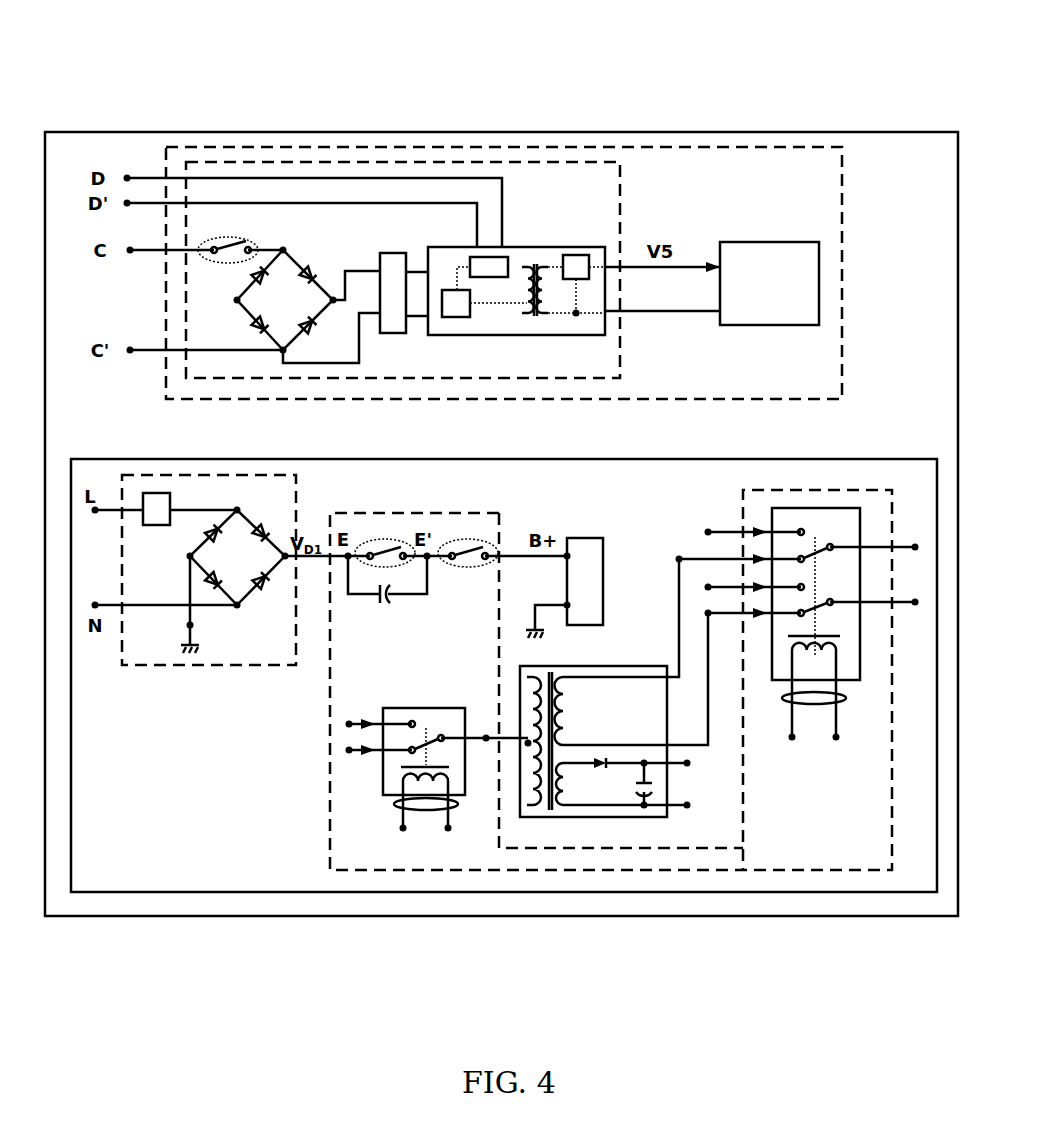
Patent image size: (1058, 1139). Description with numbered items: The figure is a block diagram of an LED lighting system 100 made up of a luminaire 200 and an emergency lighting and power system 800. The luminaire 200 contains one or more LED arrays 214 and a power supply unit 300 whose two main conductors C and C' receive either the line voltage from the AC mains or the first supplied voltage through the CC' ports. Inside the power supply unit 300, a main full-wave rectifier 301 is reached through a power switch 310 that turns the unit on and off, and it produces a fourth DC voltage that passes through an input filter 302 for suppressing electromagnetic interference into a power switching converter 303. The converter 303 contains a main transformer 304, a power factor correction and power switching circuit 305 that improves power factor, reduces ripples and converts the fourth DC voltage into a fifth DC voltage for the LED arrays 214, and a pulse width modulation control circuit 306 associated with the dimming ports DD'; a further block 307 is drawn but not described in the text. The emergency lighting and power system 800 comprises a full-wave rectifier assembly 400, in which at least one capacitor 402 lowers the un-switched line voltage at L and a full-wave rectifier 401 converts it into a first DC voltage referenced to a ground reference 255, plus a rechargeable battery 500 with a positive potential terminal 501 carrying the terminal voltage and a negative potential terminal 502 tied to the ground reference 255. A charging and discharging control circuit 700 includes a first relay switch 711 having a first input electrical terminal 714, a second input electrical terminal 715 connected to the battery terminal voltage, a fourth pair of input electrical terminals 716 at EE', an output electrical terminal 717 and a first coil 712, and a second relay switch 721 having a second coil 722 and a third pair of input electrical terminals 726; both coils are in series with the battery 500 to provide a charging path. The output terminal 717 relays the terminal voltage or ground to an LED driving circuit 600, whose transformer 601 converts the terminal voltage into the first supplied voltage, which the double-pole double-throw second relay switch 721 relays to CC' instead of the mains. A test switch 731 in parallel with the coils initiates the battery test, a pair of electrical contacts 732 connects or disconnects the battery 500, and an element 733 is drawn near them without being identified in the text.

The LED lighting system 100 is at (396, 130).
The luminaire 200 is at (549, 146).
The power supply unit 300 is at (447, 161).
The main full-wave rectifier 301 is at (265, 243).
The input filter 302 is at (384, 253).
The power switching converter 303 is at (606, 246).
The main transformer 304 is at (535, 265).
The power factor correction and power switching circuit 305 is at (456, 318).
The pulse width modulation control circuit 306 is at (500, 278).
The output regulator 307 is at (578, 255).
The power switch 310 is at (227, 263).
The LED arrays 214 is at (752, 242).
The emergency lighting and power system 800 is at (868, 458).
The full-wave rectifier assembly 400 is at (256, 670).
The full-wave rectifier 401 is at (233, 503).
The capacitor 402 is at (150, 493).
The ground reference 255 is at (184, 650).
The test switch 731 is at (383, 540).
The pair of electrical contacts 732 is at (488, 540).
The capacitor 733 is at (388, 604).
The rechargeable battery 500 is at (604, 540).
The positive potential terminal 501 is at (569, 554).
The negative potential terminal 502 is at (567, 608).
The first relay switch 711 is at (433, 814).
The first input electrical terminal 714 is at (413, 721).
The output electrical terminal 717 is at (443, 735).
The second input electrical terminal 715 is at (410, 753).
The first coil 712 is at (430, 782).
The fourth pair of input electrical terminals 716 is at (420, 810).
The charging and discharging control circuit 700 is at (548, 873).
The LED driving circuit 600 is at (621, 743).
The transformer 601 is at (550, 810).
The second relay switch 721 is at (798, 674).
The second coil 722 is at (817, 652).
The third pair of input electrical terminals 726 is at (812, 704).